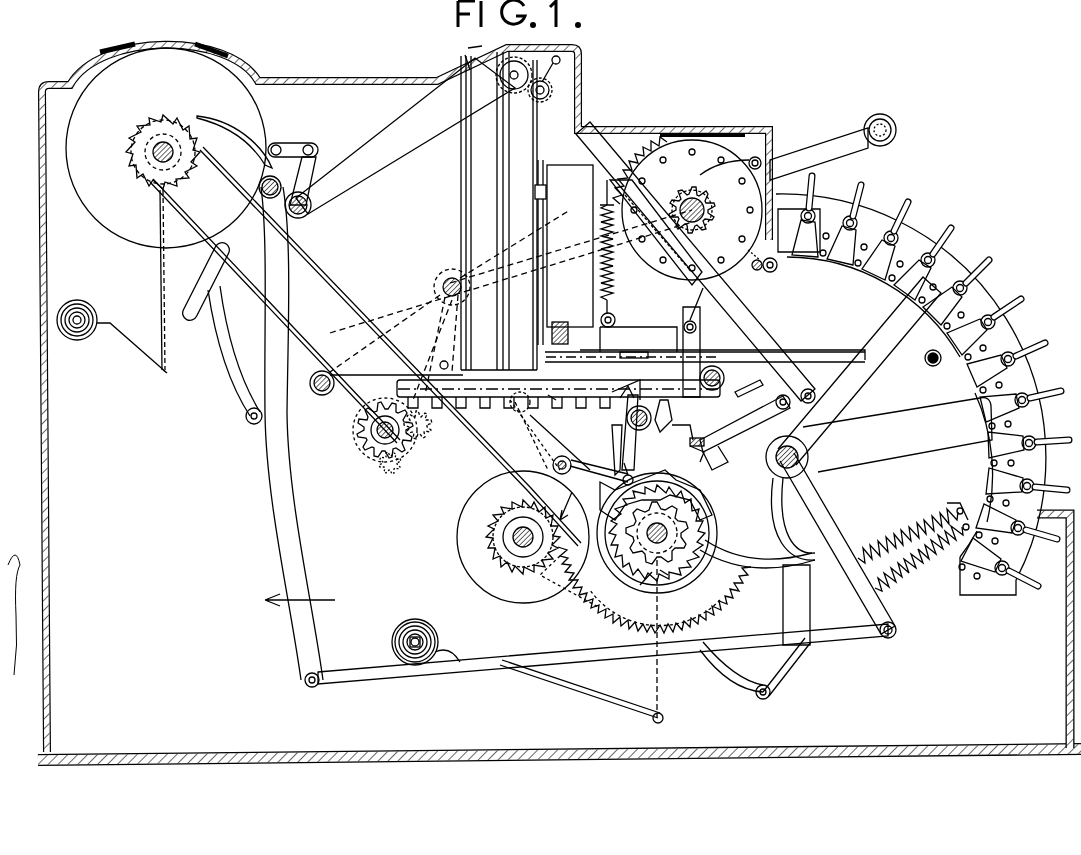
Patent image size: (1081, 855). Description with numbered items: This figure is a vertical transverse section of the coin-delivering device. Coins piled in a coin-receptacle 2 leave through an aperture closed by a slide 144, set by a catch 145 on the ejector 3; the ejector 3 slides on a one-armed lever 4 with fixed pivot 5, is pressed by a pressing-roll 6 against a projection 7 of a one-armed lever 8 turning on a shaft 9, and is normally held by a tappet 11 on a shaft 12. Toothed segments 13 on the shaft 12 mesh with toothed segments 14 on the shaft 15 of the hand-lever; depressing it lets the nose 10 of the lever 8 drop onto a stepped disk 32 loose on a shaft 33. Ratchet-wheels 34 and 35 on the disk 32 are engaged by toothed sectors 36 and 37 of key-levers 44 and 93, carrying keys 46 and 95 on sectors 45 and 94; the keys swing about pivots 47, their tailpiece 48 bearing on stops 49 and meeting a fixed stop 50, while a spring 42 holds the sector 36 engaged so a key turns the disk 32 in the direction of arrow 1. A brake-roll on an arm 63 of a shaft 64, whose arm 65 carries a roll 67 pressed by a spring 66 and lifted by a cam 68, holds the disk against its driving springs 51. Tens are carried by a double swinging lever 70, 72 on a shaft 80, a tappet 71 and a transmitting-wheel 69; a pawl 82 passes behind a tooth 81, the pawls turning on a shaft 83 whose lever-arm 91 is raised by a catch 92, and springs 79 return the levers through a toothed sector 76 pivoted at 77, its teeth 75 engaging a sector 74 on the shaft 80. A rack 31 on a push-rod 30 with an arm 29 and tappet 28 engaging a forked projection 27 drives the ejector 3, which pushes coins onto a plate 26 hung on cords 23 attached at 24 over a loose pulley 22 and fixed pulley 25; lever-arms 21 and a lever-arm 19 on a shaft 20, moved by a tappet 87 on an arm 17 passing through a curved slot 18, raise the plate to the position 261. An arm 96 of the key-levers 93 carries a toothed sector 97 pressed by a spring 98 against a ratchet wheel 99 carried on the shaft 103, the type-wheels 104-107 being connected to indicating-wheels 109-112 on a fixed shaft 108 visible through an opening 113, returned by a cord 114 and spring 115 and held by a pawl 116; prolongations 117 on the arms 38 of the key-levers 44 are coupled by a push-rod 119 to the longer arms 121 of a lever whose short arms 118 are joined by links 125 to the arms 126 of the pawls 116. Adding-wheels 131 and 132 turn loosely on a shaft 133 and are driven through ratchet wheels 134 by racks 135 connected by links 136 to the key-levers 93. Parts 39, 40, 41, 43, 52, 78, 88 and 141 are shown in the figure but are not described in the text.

The section line 1 is at (566, 506).
The housing 2 is at (605, 172).
The shelf plate 3 is at (638, 339).
The bar 4 is at (836, 352).
The pin 5 is at (937, 362).
The pivot roller 6 is at (615, 318).
The slide bar 7 is at (645, 355).
The casing 8 is at (358, 78).
The pivot 9 is at (322, 392).
The lever 10 is at (702, 458).
The shaft 11 is at (355, 428).
The gear 12 is at (365, 448).
The pinion 13 is at (428, 440).
The roller 14 is at (508, 410).
The pivot stud 15 is at (440, 282).
The strap 17 is at (340, 360).
The curved arm 18 is at (224, 330).
The arm end 19 is at (245, 262).
The pivot 20 is at (311, 208).
The arm 21 is at (400, 166).
The roller 22 is at (546, 98).
The guide bars 23 is at (505, 138).
The pin 24 is at (560, 60).
The roller 25 is at (515, 60).
The stop 261 is at (477, 51).
The block 26 is at (512, 362).
The arm 27 is at (703, 301).
The pivot 28 is at (697, 326).
The slide 29 is at (701, 341).
The rack 30 is at (558, 393).
The link 31 is at (526, 435).
The toothed sector 32 is at (640, 600).
The ratchet wheel 33 is at (700, 570).
The gear 34 is at (680, 525).
The pawl 35 is at (675, 580).
The arc lever 36 is at (740, 555).
The sector 37 is at (728, 600).
The arm 38 is at (843, 520).
The spring 39 is at (910, 535).
The pivot 40 is at (805, 650).
The link 41 is at (775, 685).
The link 42 is at (793, 519).
The hub 43 is at (808, 463).
The arm 44 is at (910, 437).
The key 45 is at (1040, 395).
The arm 46 is at (818, 142).
The key 47 is at (1022, 325).
The key 48 is at (1020, 355).
The key 49 is at (1035, 380).
The spring anchor 50 is at (954, 502).
The link 51 is at (575, 675).
The rod 52 is at (649, 641).
The pivot 63 is at (596, 472).
The roller 64 is at (569, 457).
The link 65 is at (560, 442).
The link 66 is at (535, 455).
The stud 67 is at (555, 407).
The spring 68 is at (600, 250).
The lever 69 is at (712, 497).
The pawl arm 70 is at (622, 435).
The link 71 is at (599, 461).
The pawl 72 is at (614, 450).
The pawl 74 is at (677, 411).
The pawl 75 is at (687, 426).
The lever 76 is at (745, 430).
The pivot 77 is at (783, 412).
The lever 78 is at (740, 428).
The wedge 79 is at (751, 382).
The pivot 80 is at (631, 418).
The pawl 81 is at (620, 408).
The stop 82 is at (626, 389).
The pivot 83 is at (724, 376).
The pivot 87 is at (254, 424).
The pinion 88 is at (382, 470).
The link 91 is at (432, 346).
The link 92 is at (451, 333).
The arm 93 is at (880, 380).
The sector ring 94 is at (862, 262).
The key 95 is at (856, 200).
The bar 96 is at (811, 604).
The sector 97 is at (600, 605).
The link 98 is at (735, 690).
The disc 99 is at (490, 560).
The ratchet gear 103 is at (500, 537).
The spring drum 104-107 is at (512, 598).
The hub 108 is at (150, 156).
The disc 109-112 is at (240, 96).
The pad 113 is at (165, 44).
The rod 114 is at (162, 291).
The spring 115 is at (120, 328).
The pawl 116 is at (222, 126).
The spring 117 is at (922, 560).
The arm 118 is at (316, 165).
The bar 119 is at (512, 660).
The curved bar 121 is at (288, 450).
The pivot 125 is at (313, 146).
The link 126 is at (278, 145).
The slotted lever 131 is at (670, 270).
The casing wall 132 is at (714, 128).
The star wheel 133 is at (710, 200).
The disc 134 is at (712, 213).
The ratchet 135 is at (617, 152).
The arm 136 is at (760, 328).
The pivot 141 is at (778, 266).
The rod 144 is at (545, 212).
The rack bar 145 is at (559, 388).